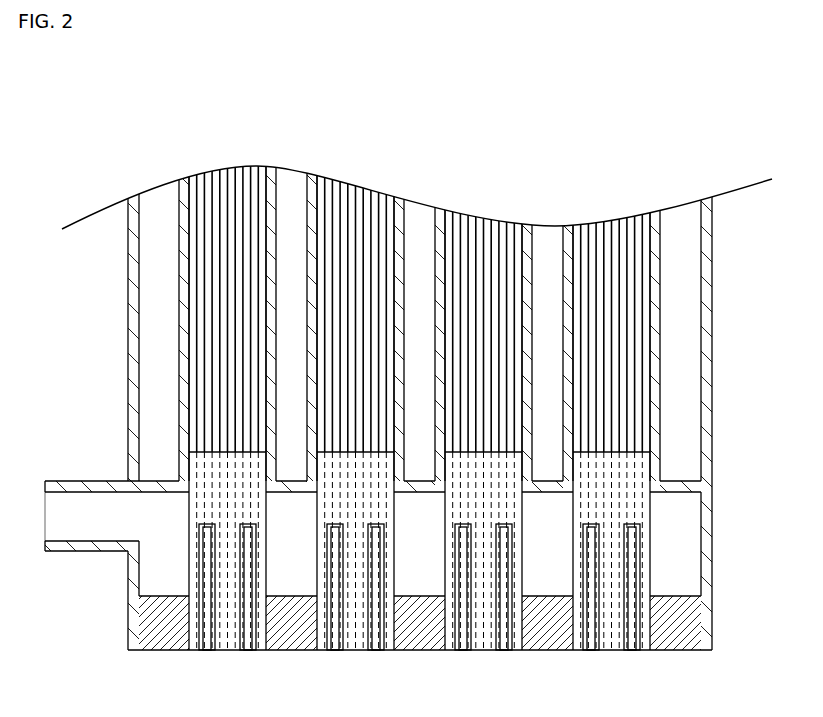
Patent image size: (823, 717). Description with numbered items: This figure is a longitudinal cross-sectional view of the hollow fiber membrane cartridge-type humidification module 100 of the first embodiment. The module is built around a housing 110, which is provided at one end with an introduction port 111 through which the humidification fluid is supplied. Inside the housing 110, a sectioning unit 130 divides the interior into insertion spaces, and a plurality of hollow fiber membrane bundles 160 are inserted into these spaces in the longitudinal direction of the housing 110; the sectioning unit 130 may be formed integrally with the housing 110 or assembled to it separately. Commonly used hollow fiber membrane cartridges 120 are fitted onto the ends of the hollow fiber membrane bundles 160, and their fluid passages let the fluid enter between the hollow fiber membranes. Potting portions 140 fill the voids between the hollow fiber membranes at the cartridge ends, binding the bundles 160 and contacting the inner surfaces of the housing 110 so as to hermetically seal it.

The hollow fiber membrane cartridge-type humidification module 100 is at (522, 178).
The housing 110 is at (722, 423).
The introduction port 111 is at (98, 481).
The commonly used hollow fiber membrane cartridge 120 is at (230, 633).
The sectioning unit 130 is at (300, 285).
The potting portion 140 is at (168, 628).
The hollow fiber membrane bundle 160 is at (197, 347).